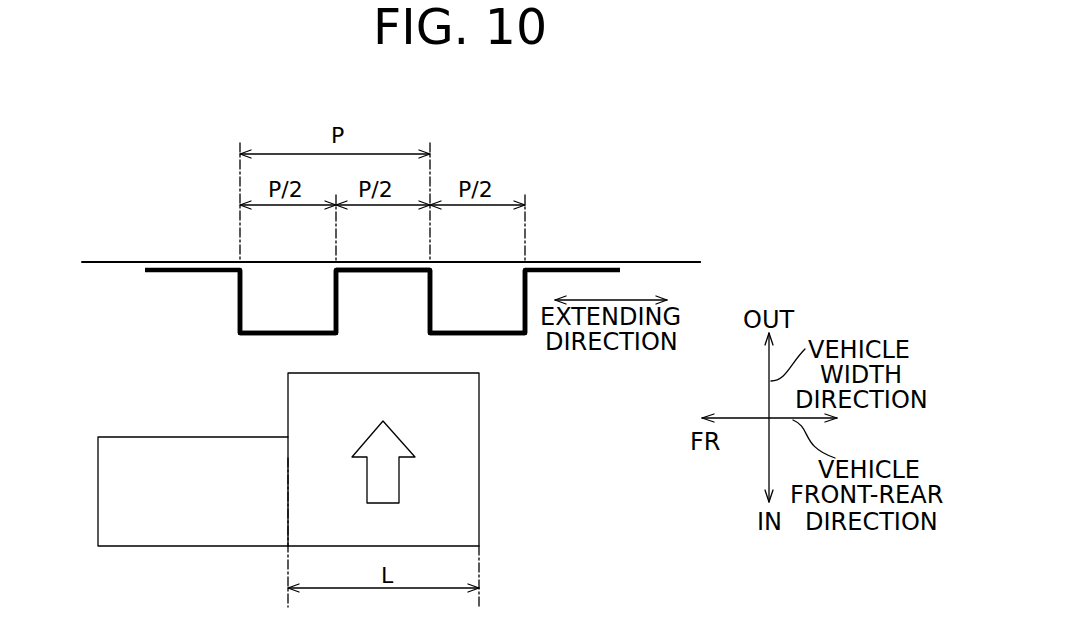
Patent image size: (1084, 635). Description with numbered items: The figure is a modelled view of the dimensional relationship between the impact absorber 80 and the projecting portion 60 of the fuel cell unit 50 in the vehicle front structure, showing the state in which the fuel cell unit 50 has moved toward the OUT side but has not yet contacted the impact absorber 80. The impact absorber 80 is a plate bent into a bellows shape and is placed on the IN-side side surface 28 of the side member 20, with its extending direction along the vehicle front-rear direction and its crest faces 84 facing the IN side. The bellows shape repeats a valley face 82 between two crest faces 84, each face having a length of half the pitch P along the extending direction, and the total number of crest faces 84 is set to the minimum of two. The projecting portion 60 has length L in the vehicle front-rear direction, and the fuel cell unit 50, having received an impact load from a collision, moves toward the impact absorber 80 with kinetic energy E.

The side member 20 is at (126, 249).
The IN-side side surface 28 is at (680, 267).
The fuel cell unit 50 is at (112, 493).
The projecting portion 60 is at (465, 413).
The impact absorber 80 is at (193, 318).
The valley face 82 is at (381, 273).
The crest face 84 is at (262, 337).